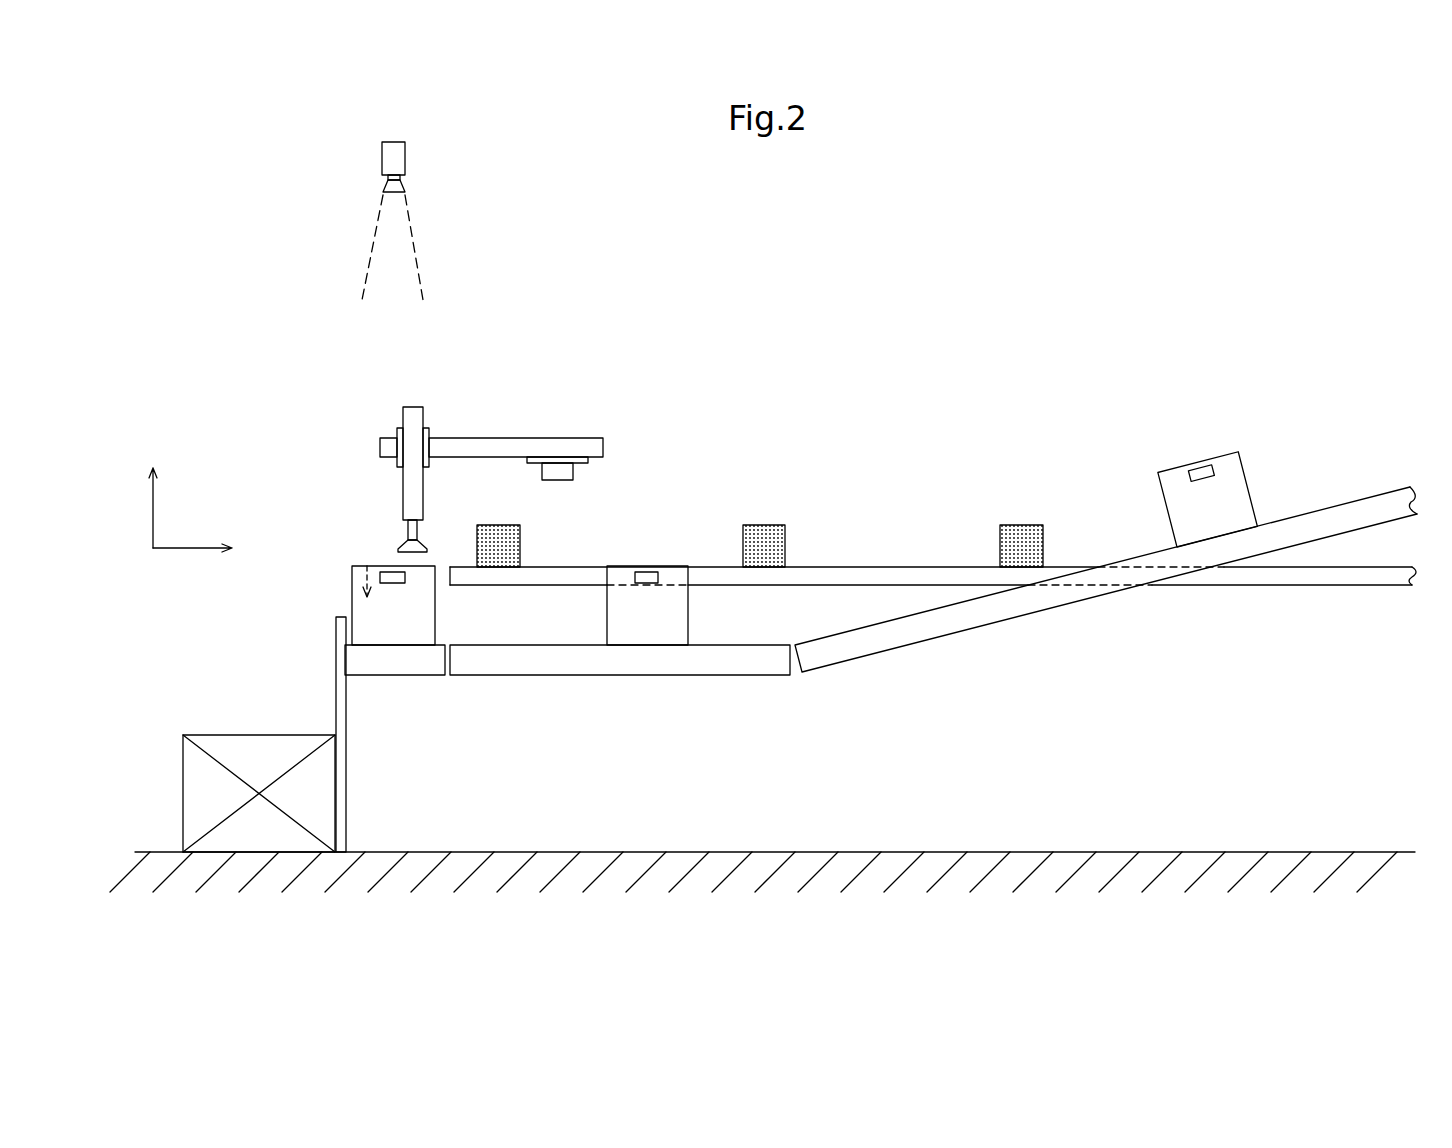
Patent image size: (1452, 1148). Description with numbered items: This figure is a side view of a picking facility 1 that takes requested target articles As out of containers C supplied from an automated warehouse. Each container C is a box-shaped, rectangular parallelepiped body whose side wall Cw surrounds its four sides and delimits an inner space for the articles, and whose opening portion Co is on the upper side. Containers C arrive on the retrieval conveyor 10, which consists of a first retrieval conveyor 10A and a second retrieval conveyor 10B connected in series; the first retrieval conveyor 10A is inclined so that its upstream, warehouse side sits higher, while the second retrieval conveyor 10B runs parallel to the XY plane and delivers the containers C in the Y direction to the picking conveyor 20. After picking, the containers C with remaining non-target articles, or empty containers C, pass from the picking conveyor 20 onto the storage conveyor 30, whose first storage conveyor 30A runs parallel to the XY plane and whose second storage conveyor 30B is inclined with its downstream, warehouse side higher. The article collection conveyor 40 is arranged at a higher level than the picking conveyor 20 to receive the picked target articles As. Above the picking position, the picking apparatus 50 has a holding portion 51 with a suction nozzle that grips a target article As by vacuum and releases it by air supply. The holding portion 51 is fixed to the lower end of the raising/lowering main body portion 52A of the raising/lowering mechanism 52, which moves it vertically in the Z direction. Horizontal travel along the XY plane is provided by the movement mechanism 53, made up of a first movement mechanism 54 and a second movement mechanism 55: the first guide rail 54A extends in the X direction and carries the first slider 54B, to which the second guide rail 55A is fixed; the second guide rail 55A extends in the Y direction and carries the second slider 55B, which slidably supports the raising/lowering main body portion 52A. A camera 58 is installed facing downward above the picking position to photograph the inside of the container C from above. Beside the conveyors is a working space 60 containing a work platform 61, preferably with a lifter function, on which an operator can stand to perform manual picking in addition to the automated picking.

The picking facility 1 is at (1262, 192).
The retrieval conveyor 10 is at (933, 648).
The first retrieval conveyor 10A is at (1106, 598).
The second retrieval conveyor 10B is at (620, 702).
The picking conveyor 20 is at (393, 668).
The storage conveyor 30 is at (933, 623).
The first storage conveyor 30A is at (572, 663).
The second storage conveyor 30B is at (972, 627).
The article collection conveyor 40 is at (1338, 587).
The picking apparatus 50 is at (494, 433).
The holding portion 51 is at (382, 517).
The raising/lowering mechanism 52 is at (408, 480).
The raising/lowering main body portion 52A is at (335, 463).
The movement mechanism 53 is at (581, 429).
The first movement mechanism 54 is at (633, 500).
The first guide rail 54A is at (560, 478).
The first slider 54B is at (583, 465).
The second movement mechanism 55 is at (513, 390).
The second guide rail 55A is at (528, 445).
The second slider 55B is at (435, 433).
The camera 58 is at (400, 158).
The working space 60 is at (237, 734).
The work platform 61 is at (172, 740).
The container C is at (783, 522).
The opening portion Co is at (364, 562).
The side wall Cw is at (433, 610).
The target articles As is at (1008, 530).